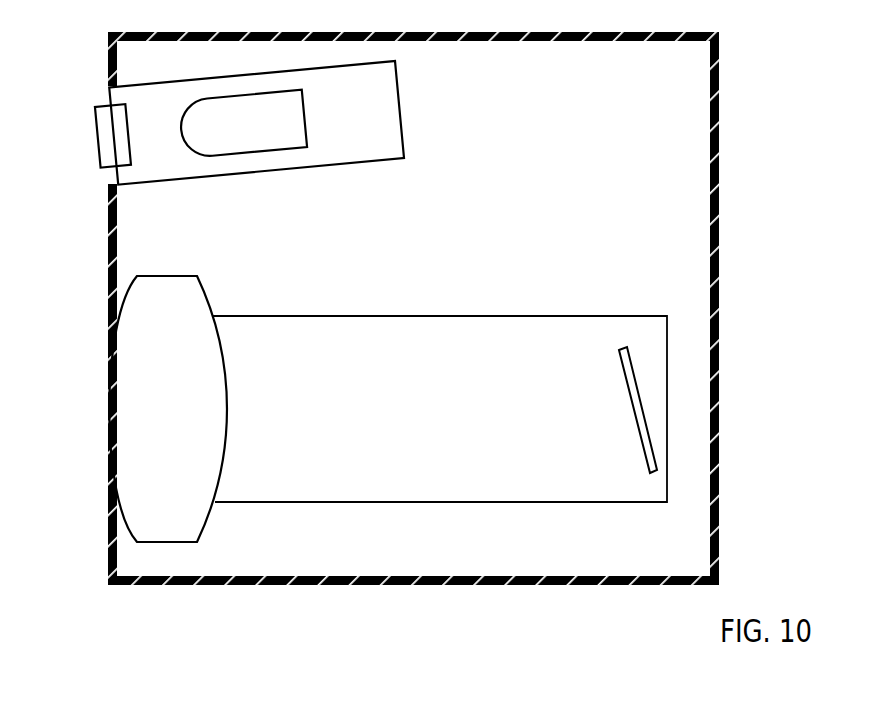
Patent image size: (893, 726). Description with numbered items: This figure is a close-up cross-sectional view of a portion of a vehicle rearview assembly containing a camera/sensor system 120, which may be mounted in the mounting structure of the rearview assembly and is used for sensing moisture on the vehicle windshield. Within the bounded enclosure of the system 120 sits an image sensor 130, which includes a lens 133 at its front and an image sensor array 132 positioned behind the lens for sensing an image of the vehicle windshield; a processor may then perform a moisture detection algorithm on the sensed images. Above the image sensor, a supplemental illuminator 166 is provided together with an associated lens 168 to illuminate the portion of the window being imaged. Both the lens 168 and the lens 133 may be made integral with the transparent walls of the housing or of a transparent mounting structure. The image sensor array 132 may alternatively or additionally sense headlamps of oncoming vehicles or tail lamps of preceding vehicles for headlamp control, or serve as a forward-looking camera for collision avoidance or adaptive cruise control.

The camera/sensor system 120 is at (672, 148).
The image sensor 130 is at (82, 415).
The image sensor array 132 is at (643, 452).
The lens 133 is at (131, 518).
The supplemental illuminator 166 is at (240, 156).
The lens 168 is at (95, 138).